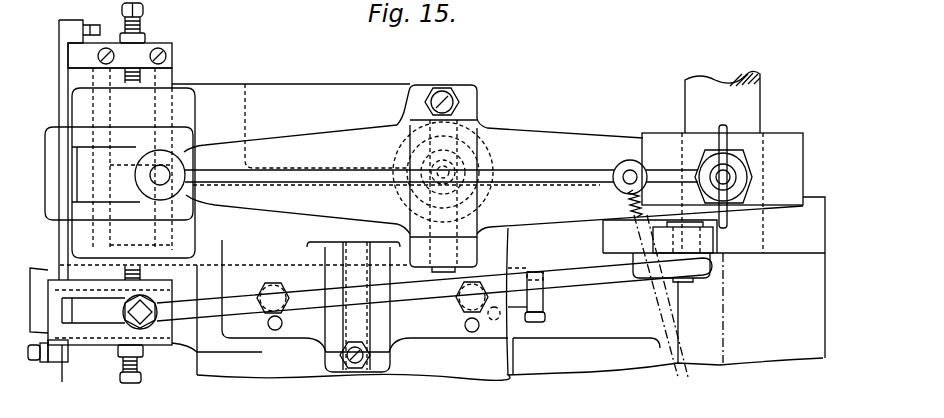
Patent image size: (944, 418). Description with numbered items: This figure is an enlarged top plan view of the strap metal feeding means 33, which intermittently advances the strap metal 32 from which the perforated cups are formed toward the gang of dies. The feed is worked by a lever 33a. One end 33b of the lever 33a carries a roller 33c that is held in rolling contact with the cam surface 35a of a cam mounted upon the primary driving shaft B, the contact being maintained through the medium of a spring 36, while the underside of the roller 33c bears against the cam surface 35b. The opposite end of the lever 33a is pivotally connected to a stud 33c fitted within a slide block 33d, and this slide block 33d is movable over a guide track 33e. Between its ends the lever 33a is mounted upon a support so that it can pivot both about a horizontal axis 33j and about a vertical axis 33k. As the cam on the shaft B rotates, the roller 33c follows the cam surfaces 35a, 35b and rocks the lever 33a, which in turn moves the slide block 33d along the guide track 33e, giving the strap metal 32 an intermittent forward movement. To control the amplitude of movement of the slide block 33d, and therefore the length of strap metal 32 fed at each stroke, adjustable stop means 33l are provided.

The strap metal 32 is at (70, 191).
The strap metal feeding means 33 is at (441, 153).
The lever 33a is at (494, 214).
The end of the lever 33b is at (752, 183).
The roller and stud 33c is at (163, 172).
The slide block 33d is at (132, 137).
The guide track 33e is at (163, 78).
The horizontal axis 33j is at (440, 85).
The vertical axis 33k is at (447, 160).
The adjustable stop means 33l is at (143, 23).
The cam surface 35a is at (818, 204).
The cam surface 35b is at (722, 189).
The spring 36 is at (612, 195).
The primary driving shaft B is at (706, 109).